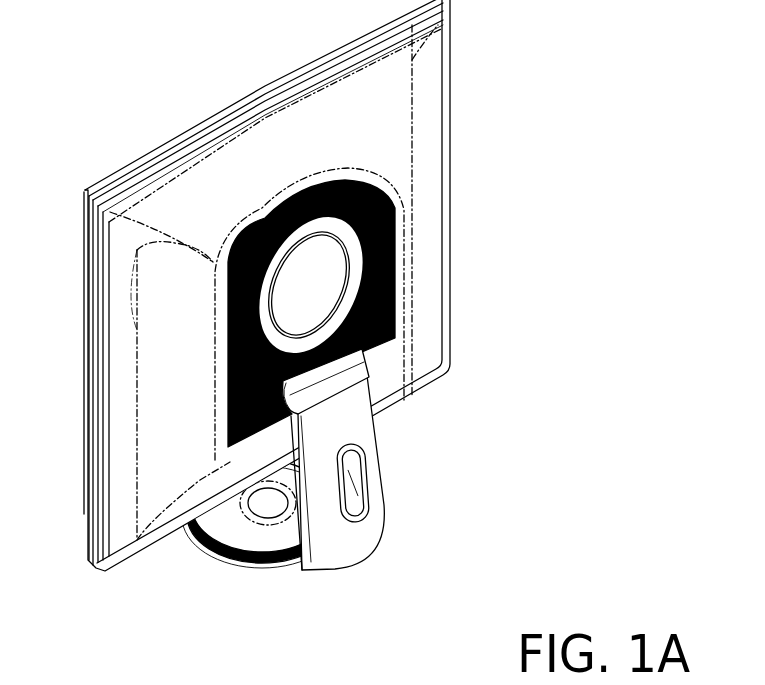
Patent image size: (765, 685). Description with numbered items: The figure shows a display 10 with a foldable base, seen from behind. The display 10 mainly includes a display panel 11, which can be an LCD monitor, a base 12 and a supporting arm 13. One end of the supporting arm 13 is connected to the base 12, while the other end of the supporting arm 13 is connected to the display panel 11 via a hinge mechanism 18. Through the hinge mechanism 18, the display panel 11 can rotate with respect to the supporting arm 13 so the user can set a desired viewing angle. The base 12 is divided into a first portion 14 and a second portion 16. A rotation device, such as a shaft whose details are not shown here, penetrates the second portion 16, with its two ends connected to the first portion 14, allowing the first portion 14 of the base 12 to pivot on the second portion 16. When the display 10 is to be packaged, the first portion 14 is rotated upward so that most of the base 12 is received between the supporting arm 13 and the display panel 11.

The display 10 is at (329, 341).
The display panel 11 is at (458, 194).
The base 12 is at (201, 571).
The supporting arm 13 is at (438, 459).
The first portion 14 is at (229, 556).
The second portion 16 is at (262, 565).
The hinge mechanism 18 is at (340, 372).